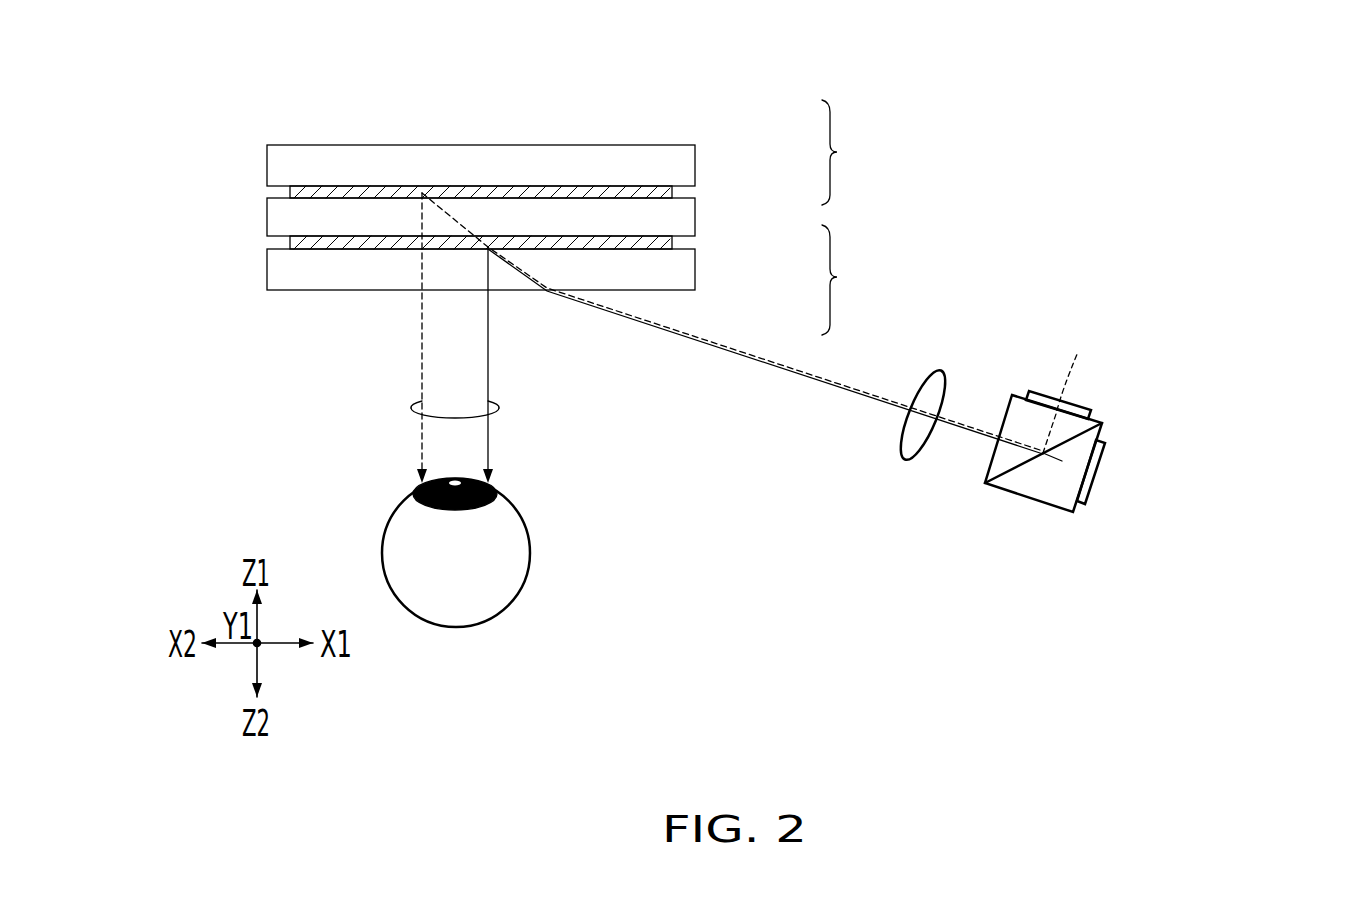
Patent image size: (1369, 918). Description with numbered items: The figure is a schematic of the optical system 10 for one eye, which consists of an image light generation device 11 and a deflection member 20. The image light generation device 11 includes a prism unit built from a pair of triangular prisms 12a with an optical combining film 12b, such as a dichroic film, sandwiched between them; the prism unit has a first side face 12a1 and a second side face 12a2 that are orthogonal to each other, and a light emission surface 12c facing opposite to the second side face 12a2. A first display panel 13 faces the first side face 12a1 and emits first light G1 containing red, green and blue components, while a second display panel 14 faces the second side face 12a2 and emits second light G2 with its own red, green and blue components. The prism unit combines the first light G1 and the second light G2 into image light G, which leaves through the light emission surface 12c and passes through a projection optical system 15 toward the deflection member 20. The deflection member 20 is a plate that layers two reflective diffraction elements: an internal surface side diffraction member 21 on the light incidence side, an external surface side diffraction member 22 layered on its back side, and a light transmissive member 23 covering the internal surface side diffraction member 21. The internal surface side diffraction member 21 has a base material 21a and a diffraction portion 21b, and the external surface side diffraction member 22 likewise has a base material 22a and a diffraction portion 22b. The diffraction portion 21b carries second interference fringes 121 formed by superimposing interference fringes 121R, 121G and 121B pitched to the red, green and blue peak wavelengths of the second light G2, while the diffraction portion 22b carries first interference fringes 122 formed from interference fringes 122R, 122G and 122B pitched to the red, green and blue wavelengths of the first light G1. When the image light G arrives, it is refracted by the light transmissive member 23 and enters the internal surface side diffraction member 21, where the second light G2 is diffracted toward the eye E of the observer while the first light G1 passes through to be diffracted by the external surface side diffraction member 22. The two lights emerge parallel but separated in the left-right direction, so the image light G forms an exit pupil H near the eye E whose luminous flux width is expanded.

The optical system 10 is at (1253, 197).
The image light generation device 11 is at (1012, 522).
The triangular prism 12a is at (1007, 428).
The first side face 12a1 is at (1017, 393).
The second side face 12a2 is at (1077, 507).
The optical combining film 12b is at (1100, 422).
The light emission surface 12c is at (982, 463).
The first display panel 13 is at (1038, 388).
The second display panel 14 is at (1107, 455).
The projection optical system 15 is at (923, 387).
The deflection member 20 is at (568, 120).
The internal surface side diffraction member 21 is at (262, 218).
The base material 21a is at (407, 210).
The diffraction portion 21b is at (525, 242).
The external surface side diffraction member 22 is at (262, 167).
The base material 22a is at (290, 158).
The diffraction portion 22b is at (328, 190).
The light transmissive member 23 is at (282, 270).
The second interference fringes 121 is at (750, 278).
The interference fringes 121R is at (614, 249).
The interference fringes 121G is at (632, 248).
The interference fringes 121B is at (643, 246).
The first interference fringes 122 is at (752, 154).
The interference fringes 122R is at (618, 188).
The interference fringes 122G is at (635, 190).
The interference fringes 122B is at (660, 194).
The image light G is at (776, 346).
The first light G1 is at (422, 358).
The second light G2 is at (488, 355).
The exit pupil H is at (498, 400).
The eye E is at (382, 548).